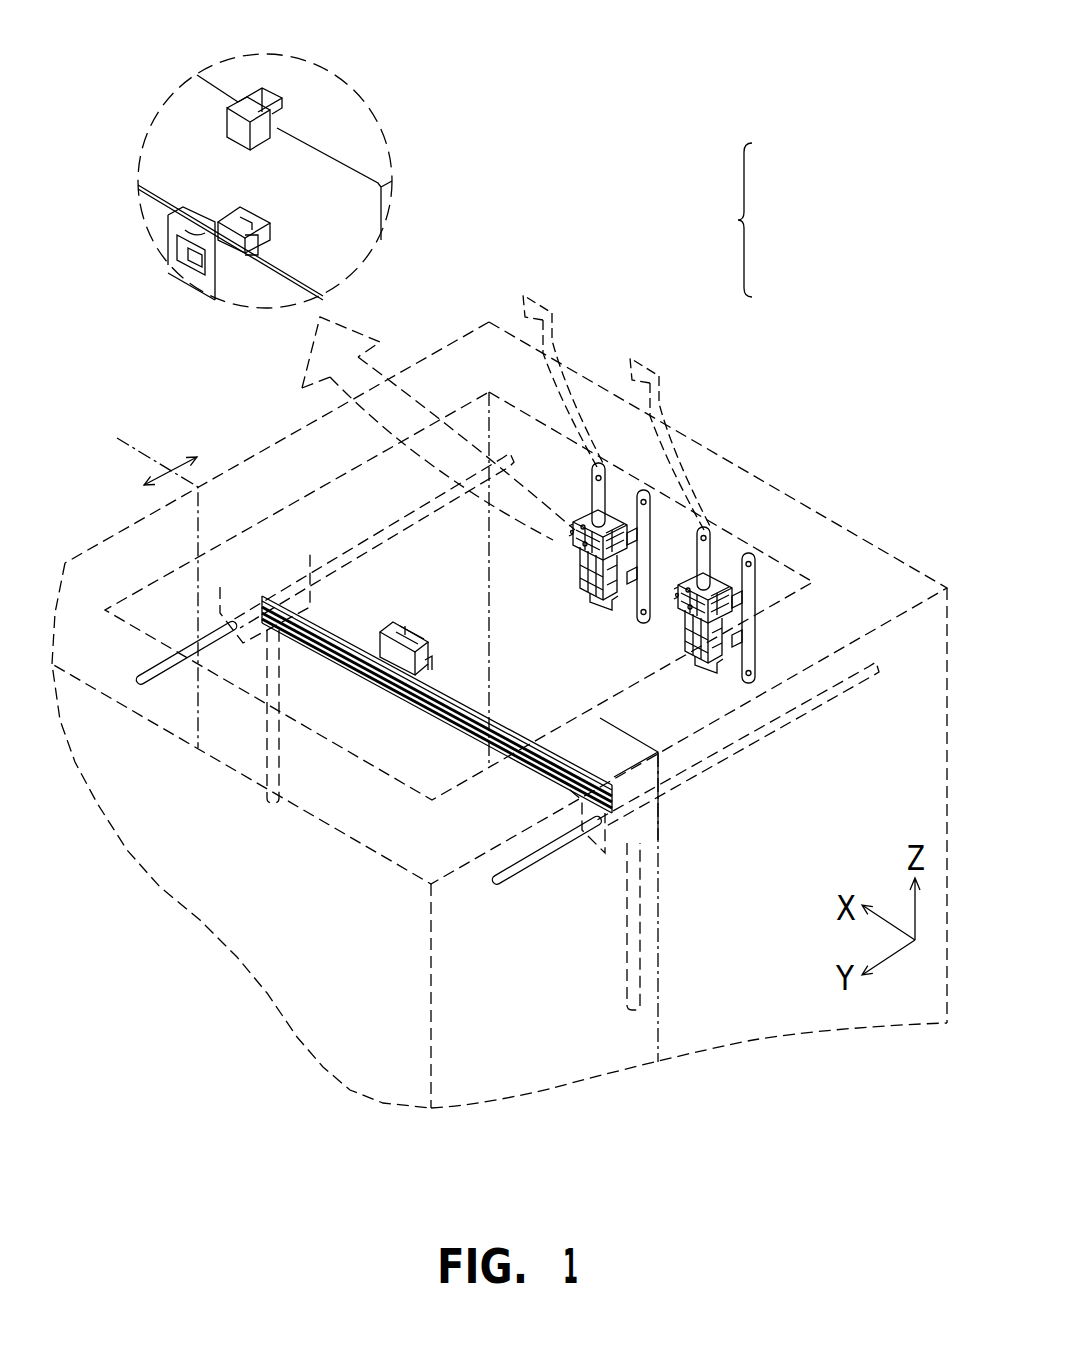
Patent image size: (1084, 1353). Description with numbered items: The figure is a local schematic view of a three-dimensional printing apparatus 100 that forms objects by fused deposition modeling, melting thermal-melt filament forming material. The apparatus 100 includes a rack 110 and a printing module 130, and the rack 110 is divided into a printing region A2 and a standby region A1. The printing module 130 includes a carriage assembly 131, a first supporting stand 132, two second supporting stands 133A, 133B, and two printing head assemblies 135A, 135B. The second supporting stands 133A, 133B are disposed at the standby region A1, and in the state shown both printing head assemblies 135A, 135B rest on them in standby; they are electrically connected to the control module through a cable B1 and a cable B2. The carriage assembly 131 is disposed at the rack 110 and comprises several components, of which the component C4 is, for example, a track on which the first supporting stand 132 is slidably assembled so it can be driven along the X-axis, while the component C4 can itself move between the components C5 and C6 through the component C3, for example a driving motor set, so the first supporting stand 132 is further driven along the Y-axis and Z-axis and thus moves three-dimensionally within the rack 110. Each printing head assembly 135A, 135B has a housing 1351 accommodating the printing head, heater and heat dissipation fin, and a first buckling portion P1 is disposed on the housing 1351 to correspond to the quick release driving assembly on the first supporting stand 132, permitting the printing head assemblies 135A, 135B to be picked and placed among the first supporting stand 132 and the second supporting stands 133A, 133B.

The three-dimensional printing apparatus 100 is at (877, 1099).
The rack 110 is at (860, 536).
The printing module 130 is at (785, 222).
The carriage assembly 131 is at (541, 1010).
The first supporting stand 132 is at (387, 627).
The second supporting stand 133A is at (628, 517).
The second supporting stand 133B is at (727, 587).
The printing head assembly 135A is at (584, 598).
The printing head assembly 135B is at (669, 646).
The housing 1351 is at (337, 185).
The first buckling portion P1 is at (240, 210).
The standby region A1 is at (189, 451).
The printing region A2 is at (131, 491).
The cable B1 is at (558, 365).
The cable B2 is at (661, 428).
The component (driving motor set) C3 is at (268, 541).
The component (track) C4 is at (433, 710).
The component C5 is at (185, 628).
The component C6 is at (267, 750).